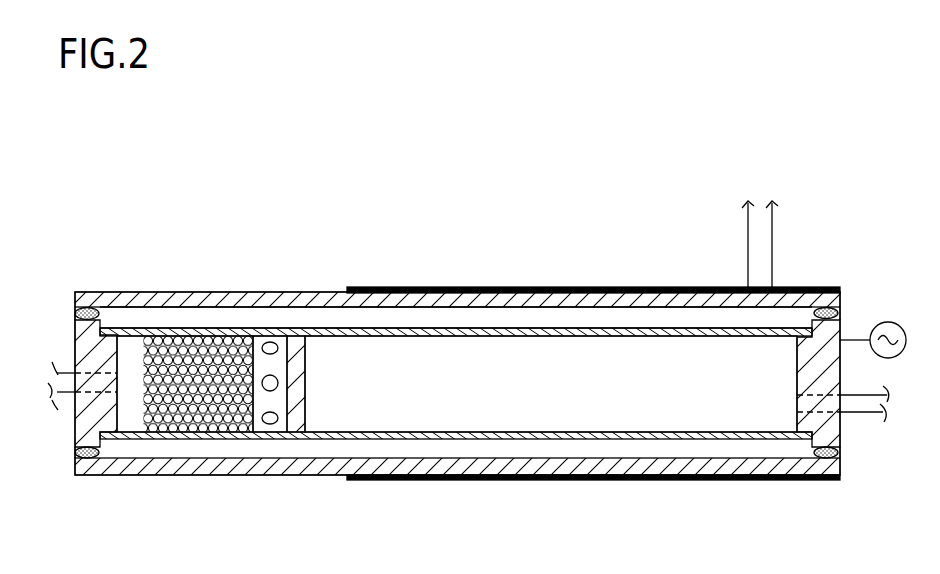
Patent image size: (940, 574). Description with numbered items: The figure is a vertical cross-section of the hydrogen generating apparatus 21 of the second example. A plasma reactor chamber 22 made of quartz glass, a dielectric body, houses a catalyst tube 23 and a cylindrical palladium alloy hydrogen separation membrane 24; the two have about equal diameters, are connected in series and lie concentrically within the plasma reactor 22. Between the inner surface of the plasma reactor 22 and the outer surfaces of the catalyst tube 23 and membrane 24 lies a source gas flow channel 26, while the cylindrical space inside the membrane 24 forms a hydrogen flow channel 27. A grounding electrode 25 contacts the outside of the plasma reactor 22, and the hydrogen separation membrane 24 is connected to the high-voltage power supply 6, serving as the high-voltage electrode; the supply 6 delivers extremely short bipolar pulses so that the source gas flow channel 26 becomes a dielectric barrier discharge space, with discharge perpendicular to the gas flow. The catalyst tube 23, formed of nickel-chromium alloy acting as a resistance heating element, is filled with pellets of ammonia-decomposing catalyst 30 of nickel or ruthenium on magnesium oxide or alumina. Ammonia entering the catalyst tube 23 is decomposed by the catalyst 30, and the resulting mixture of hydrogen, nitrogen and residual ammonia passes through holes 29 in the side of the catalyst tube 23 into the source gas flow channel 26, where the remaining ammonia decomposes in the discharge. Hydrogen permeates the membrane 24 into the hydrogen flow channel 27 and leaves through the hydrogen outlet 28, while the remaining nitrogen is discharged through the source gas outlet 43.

The hydrogen generating apparatus 21 is at (549, 186).
The plasma reactor chamber 22 is at (165, 302).
The catalyst tube 23 is at (190, 434).
The hydrogen separation membrane 24 is at (445, 347).
The grounding electrode 25 is at (630, 290).
The source gas flow channel 26 is at (333, 322).
The hydrogen flow channel 27 is at (607, 388).
The hydrogen outlet 28 is at (860, 414).
The holes 29 is at (265, 342).
The ammonia-decomposing catalyst 30 is at (150, 398).
The source gas outlet 43 is at (766, 244).
The high-voltage power supply 6 is at (888, 322).